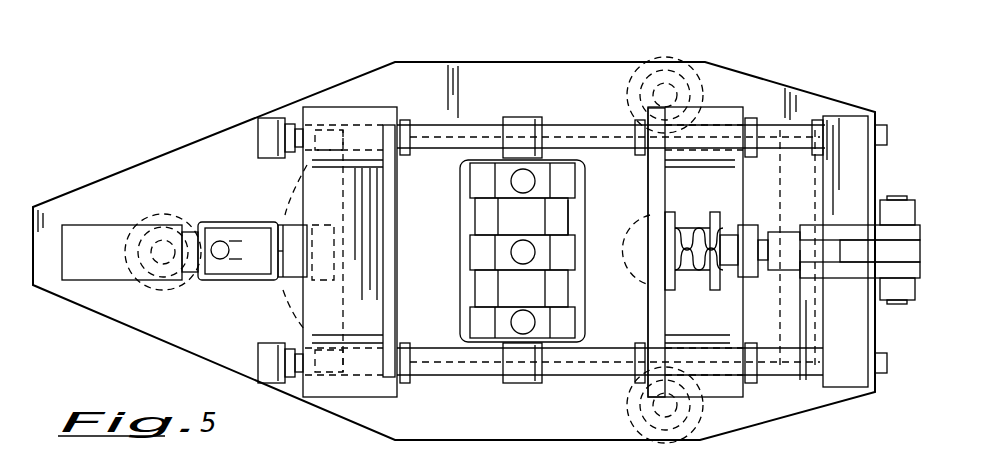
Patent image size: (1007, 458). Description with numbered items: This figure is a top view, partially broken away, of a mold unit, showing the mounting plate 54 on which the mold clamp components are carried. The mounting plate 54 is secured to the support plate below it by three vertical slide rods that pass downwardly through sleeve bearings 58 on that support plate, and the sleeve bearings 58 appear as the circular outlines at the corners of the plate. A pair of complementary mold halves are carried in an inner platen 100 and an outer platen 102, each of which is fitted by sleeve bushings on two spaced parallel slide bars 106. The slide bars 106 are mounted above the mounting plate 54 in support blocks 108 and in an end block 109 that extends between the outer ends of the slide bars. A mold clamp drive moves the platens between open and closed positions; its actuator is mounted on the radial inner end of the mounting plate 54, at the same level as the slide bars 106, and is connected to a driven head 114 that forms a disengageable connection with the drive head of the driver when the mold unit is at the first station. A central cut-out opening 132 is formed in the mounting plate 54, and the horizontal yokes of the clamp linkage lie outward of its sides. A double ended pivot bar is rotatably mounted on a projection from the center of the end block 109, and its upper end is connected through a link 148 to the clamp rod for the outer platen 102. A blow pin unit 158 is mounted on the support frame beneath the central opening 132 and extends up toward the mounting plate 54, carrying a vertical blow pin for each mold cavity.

The mounting plate 54 is at (798, 88).
The sleeve bearings 58 is at (178, 212).
The inner platen 100 is at (384, 133).
The outer platen 102 is at (655, 185).
The slide bars 106 is at (448, 352).
The support blocks 108 is at (268, 122).
The end block 109 is at (852, 192).
The driven head 114 is at (85, 268).
The central cut-out opening 132 is at (577, 282).
The link 148 is at (853, 272).
The blow pin unit 158 is at (576, 209).